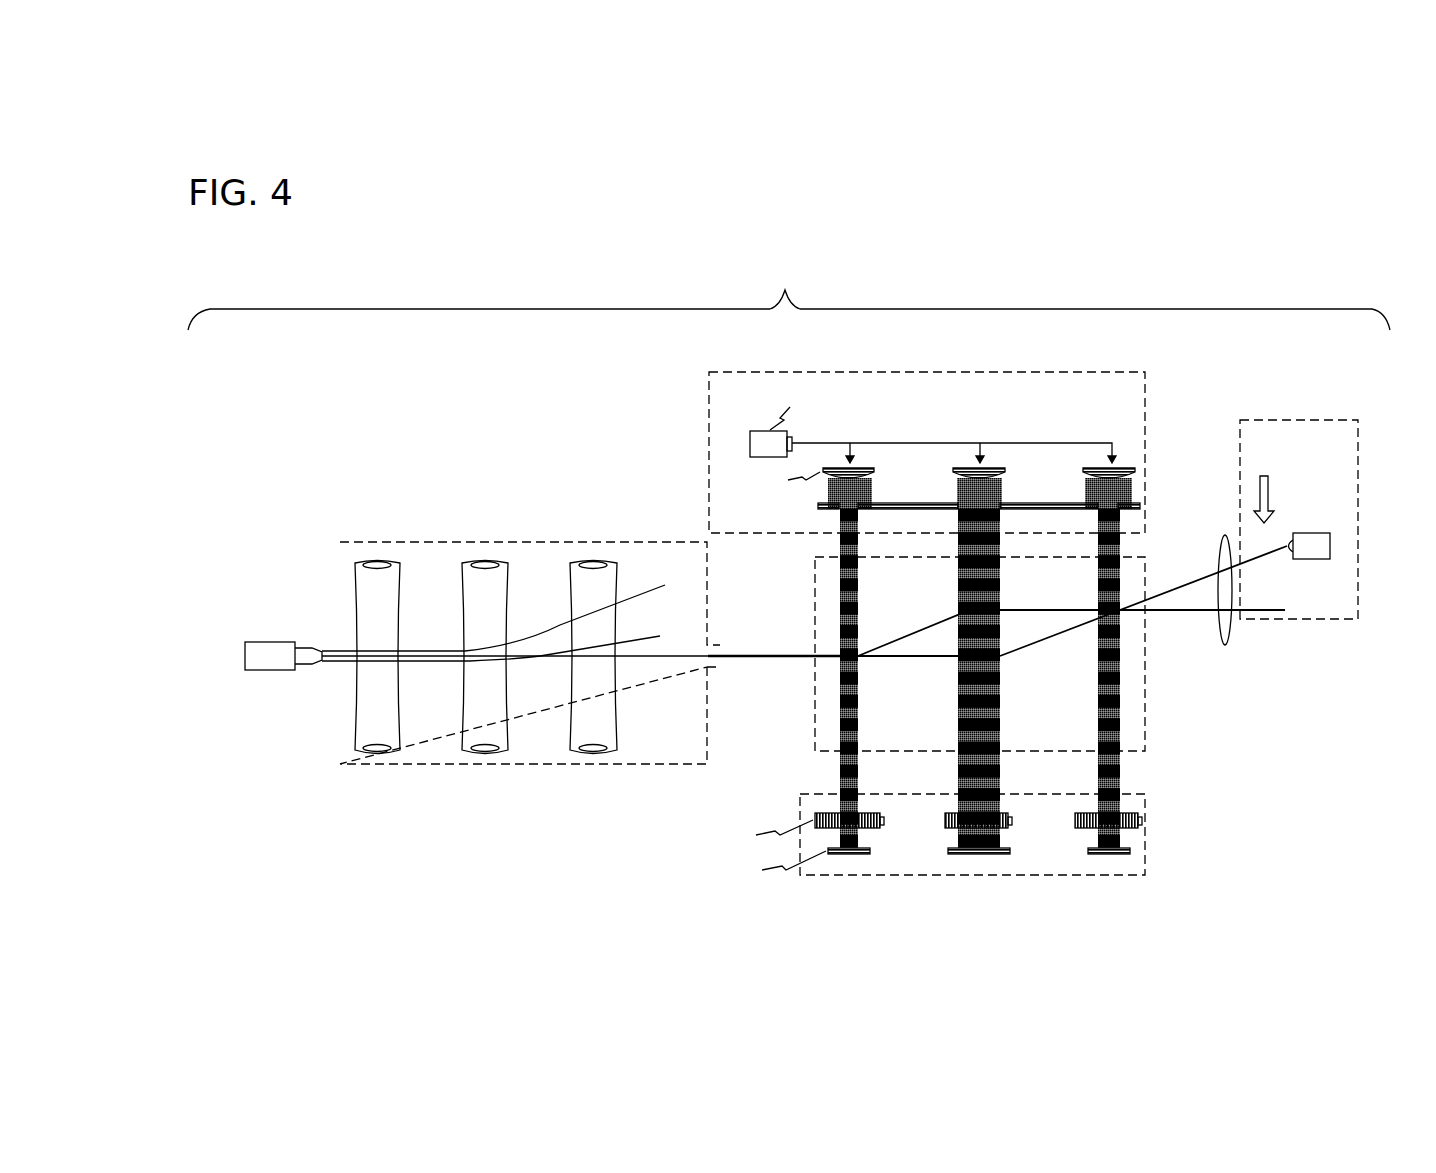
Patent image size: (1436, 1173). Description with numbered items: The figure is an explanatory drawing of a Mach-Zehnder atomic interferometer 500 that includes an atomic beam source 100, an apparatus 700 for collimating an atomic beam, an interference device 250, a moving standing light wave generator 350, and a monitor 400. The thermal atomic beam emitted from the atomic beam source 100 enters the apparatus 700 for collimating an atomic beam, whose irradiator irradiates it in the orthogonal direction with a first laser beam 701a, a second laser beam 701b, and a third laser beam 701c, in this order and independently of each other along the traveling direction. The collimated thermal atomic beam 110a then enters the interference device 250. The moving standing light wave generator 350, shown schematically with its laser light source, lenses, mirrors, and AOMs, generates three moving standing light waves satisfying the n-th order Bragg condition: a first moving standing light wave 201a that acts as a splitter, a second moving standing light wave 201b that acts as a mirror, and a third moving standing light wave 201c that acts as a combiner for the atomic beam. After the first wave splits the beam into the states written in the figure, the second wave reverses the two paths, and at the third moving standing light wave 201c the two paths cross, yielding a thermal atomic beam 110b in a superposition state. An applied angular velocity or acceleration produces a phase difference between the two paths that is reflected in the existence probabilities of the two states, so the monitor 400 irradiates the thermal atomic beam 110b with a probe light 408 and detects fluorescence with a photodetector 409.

The Mach-Zehnder atomic interferometer 500 is at (802, 284).
The atomic beam source 100 is at (281, 641).
The apparatus for collimating an atomic beam 700 is at (494, 620).
The first laser beam 701a is at (383, 560).
The second laser beam 701b is at (491, 560).
The third laser beam 701c is at (598, 560).
The thermal atomic beam 110a is at (737, 652).
The thermal atomic beam 110b is at (1219, 645).
The moving standing light wave generator 350 is at (1148, 371).
The interference device 250 is at (1147, 556).
The first moving standing light wave 201a is at (838, 768).
The second moving standing light wave 201b is at (958, 768).
The third moving standing light wave 201c is at (1098, 768).
The monitor 400 is at (1302, 419).
The probe light 408 is at (1268, 474).
The photodetector 409 is at (1318, 531).